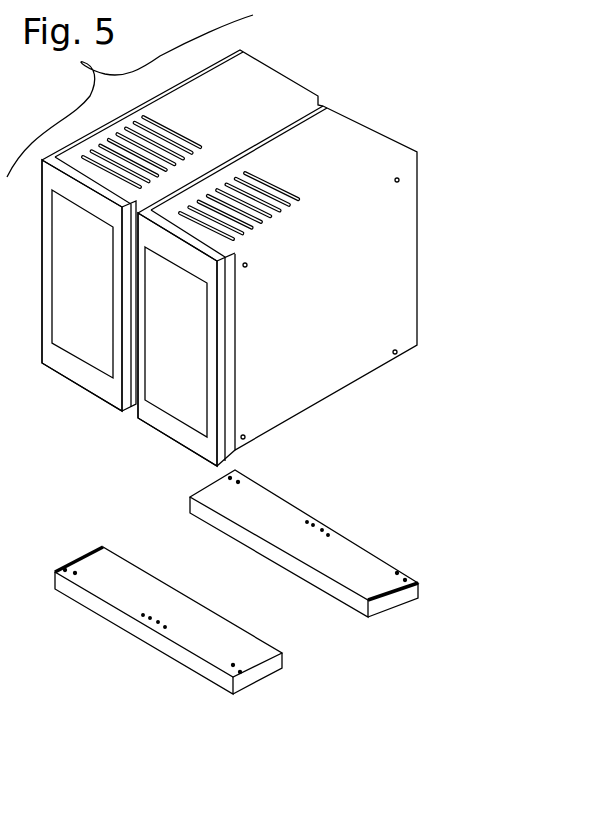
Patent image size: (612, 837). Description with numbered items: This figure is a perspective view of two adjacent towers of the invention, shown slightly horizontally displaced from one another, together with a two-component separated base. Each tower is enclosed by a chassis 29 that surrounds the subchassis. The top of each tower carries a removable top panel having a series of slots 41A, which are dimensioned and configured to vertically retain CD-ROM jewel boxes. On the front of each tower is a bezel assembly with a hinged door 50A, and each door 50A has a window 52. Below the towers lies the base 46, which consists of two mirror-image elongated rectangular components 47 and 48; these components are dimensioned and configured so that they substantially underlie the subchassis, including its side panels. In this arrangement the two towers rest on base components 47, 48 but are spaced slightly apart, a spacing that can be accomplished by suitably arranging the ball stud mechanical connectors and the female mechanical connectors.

The chassis 29 is at (312, 78).
The slots 41A is at (105, 144).
The window 52 is at (70, 290).
The door 50A is at (90, 385).
The base 46 is at (292, 497).
The base component 48 is at (263, 537).
The base component 47 is at (120, 607).